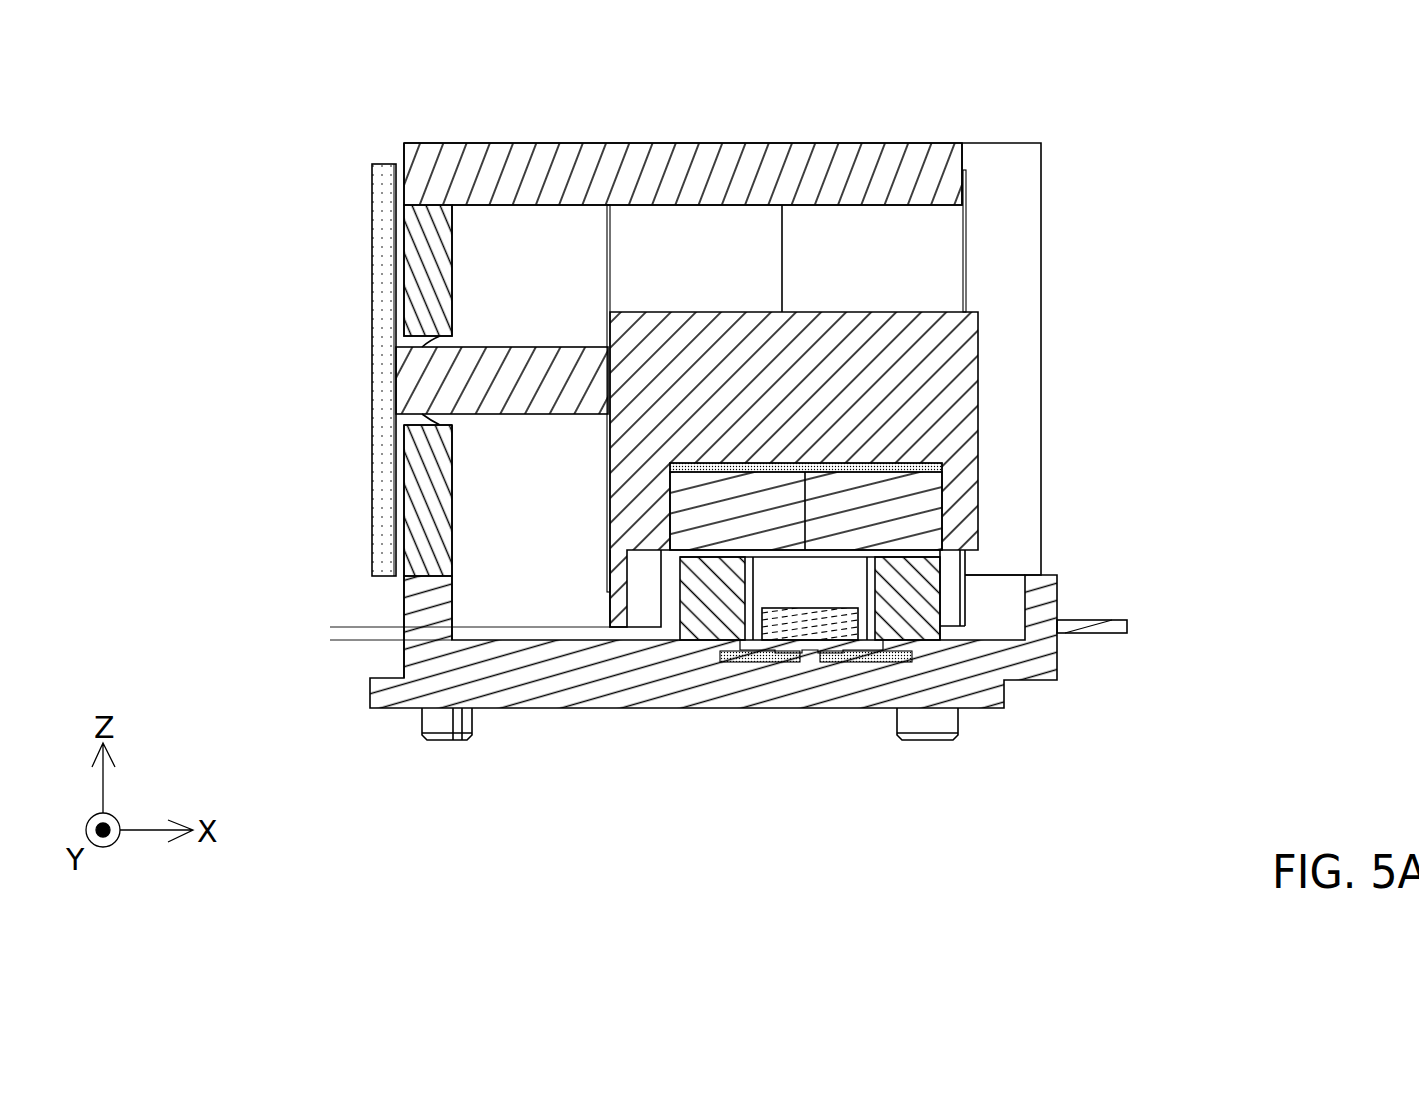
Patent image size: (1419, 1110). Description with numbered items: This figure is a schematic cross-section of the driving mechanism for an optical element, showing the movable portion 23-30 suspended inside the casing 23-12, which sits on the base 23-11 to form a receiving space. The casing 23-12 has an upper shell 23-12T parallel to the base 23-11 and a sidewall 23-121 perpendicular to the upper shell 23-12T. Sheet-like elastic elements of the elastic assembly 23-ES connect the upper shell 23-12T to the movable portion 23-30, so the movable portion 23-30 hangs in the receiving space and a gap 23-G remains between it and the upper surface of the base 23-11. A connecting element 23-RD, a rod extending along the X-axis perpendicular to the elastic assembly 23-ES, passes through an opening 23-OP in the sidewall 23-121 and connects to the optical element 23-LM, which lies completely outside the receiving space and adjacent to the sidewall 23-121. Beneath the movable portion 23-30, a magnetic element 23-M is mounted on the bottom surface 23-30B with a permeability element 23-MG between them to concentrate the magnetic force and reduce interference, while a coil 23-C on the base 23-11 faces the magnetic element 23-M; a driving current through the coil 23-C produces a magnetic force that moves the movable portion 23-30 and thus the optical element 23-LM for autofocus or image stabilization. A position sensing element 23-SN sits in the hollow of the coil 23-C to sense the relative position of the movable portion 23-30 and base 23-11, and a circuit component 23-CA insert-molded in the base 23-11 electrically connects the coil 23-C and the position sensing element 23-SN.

The casing 23-12 is at (639, 356).
The upper shell 23-12T is at (745, 175).
The sidewall 23-121 is at (420, 302).
The elastic assembly 23-ES is at (608, 232).
The optical element 23-LM is at (388, 233).
The connecting element 23-RD is at (467, 382).
The opening 23-OP is at (417, 420).
The movable portion 23-30 is at (706, 469).
The bottom surface of the movable portion 23-30B is at (672, 500).
The permeability element 23-MG is at (900, 469).
The magnetic element 23-M is at (900, 513).
The coil 23-C is at (703, 597).
The position sensing element 23-SN is at (820, 622).
The circuit component 23-CA is at (880, 660).
The base 23-11 is at (537, 670).
The gap 23-G is at (337, 588).